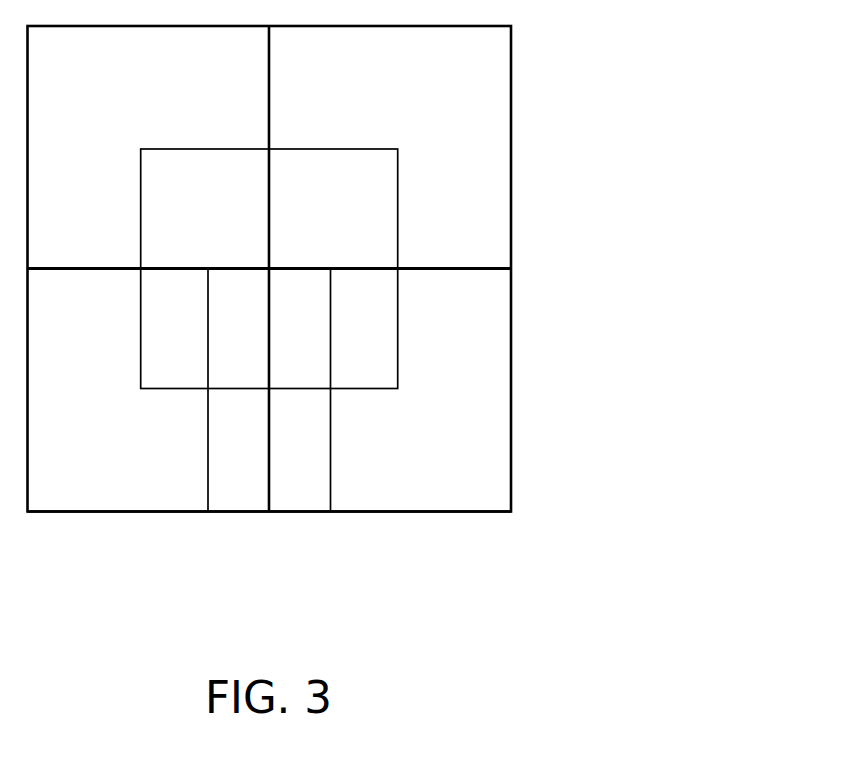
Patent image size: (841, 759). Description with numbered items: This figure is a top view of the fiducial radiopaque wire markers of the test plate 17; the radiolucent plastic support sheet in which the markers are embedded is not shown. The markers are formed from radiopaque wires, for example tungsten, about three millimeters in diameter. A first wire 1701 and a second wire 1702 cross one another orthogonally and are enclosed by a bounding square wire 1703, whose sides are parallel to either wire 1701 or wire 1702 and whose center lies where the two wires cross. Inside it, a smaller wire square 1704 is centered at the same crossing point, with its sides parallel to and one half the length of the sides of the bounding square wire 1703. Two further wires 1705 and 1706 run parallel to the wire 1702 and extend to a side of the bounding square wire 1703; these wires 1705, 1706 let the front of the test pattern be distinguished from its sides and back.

The test plate 17 is at (414, 94).
The wire 1701 is at (443, 268).
The wire 1702 is at (268, 95).
The bounding square wire 1703 is at (370, 513).
The smaller wire square 1704 is at (140, 195).
The wire 1705 is at (332, 473).
The wire 1706 is at (207, 473).